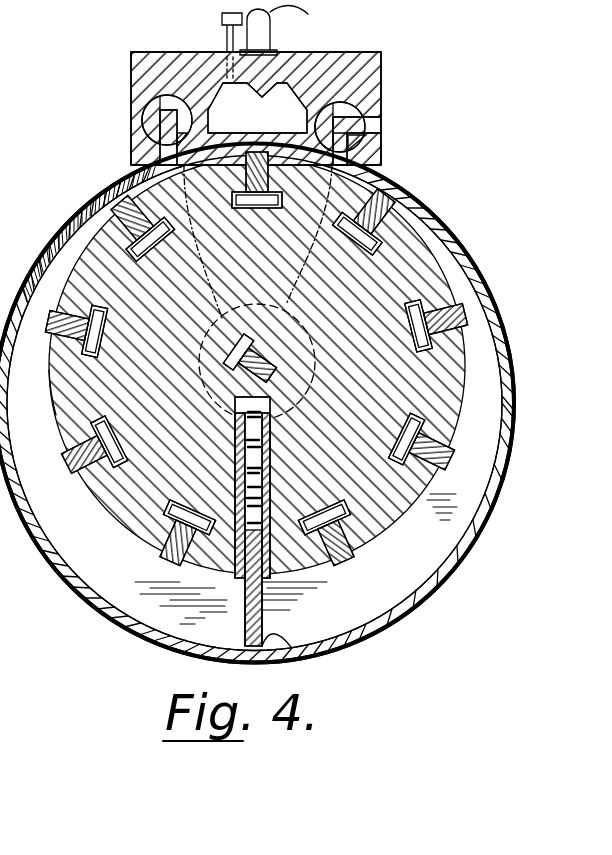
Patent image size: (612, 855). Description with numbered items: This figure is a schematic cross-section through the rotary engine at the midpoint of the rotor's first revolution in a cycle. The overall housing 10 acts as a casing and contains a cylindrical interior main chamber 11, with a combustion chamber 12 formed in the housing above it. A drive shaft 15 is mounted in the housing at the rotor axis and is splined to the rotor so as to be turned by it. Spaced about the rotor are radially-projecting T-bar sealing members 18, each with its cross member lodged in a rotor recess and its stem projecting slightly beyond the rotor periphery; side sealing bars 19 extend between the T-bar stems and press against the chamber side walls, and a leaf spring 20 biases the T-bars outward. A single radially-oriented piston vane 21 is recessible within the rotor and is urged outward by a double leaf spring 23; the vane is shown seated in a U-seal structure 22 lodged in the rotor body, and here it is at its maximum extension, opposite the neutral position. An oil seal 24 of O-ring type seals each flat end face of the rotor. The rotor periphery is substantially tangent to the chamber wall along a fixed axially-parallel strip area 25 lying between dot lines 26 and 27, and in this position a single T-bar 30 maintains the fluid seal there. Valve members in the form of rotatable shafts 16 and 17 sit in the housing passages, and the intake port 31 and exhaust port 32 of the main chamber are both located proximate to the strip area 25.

The housing 10 is at (478, 524).
The main chamber 11 is at (382, 592).
The combustion chamber 12 is at (280, 103).
The drive shaft 15 is at (275, 378).
The rotatable shaft 16 is at (157, 98).
The rotatable shaft 17 is at (355, 105).
The sealing member 18 is at (112, 412).
The side sealing bar 19 is at (68, 383).
The leaf spring 20 is at (112, 460).
The piston vane 21 is at (293, 648).
The shaft 22 is at (257, 480).
The leaf spring 23 is at (263, 453).
The oil seal 24 is at (220, 323).
The strip area 25 is at (215, 137).
The dot line 26 is at (200, 227).
The dot line 27 is at (300, 250).
The T-bar 30 is at (279, 181).
The intake port 31 is at (343, 158).
The exhaust port 32 is at (167, 151).